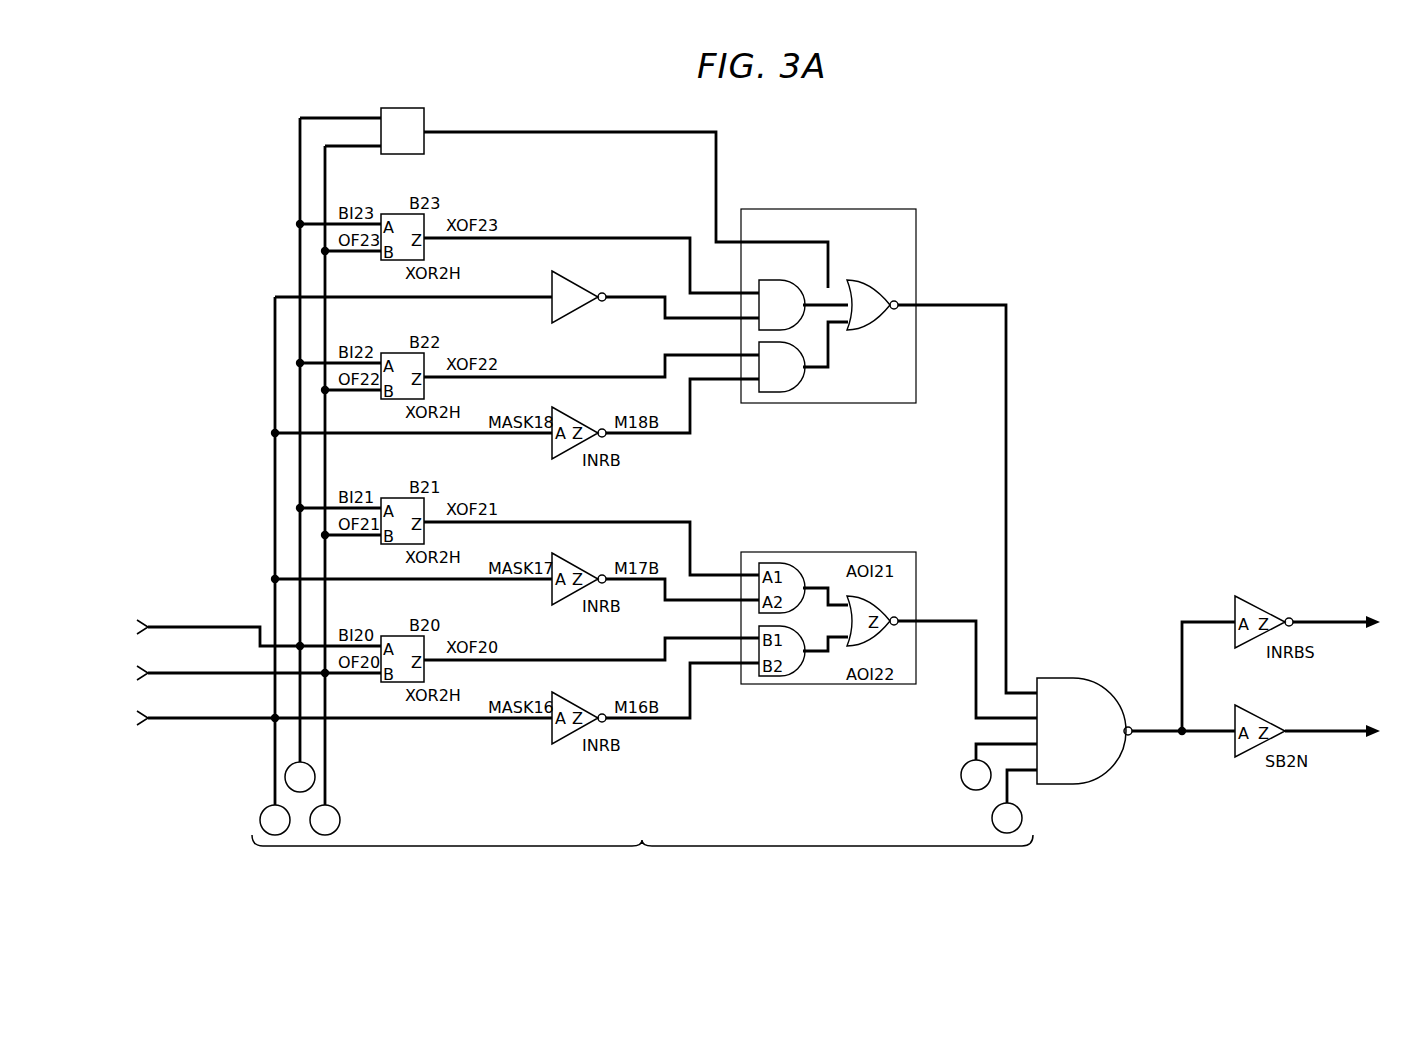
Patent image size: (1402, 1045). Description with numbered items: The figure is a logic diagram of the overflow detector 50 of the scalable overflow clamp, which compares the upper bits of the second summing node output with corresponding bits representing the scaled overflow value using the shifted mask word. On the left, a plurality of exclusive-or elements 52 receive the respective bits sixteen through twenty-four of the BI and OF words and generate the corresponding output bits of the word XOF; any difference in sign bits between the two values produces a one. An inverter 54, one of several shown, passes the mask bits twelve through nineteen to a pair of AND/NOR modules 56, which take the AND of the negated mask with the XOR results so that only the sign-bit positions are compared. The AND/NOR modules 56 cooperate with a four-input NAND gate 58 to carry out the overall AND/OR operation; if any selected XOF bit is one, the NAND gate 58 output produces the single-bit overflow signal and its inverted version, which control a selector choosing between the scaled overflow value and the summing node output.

The overflow detector 50 is at (1083, 506).
The exclusive-or elements 52 is at (403, 107).
The inverter 54 is at (552, 318).
The AND/NOR modules 56 is at (829, 403).
The NAND gate 58 is at (1053, 678).